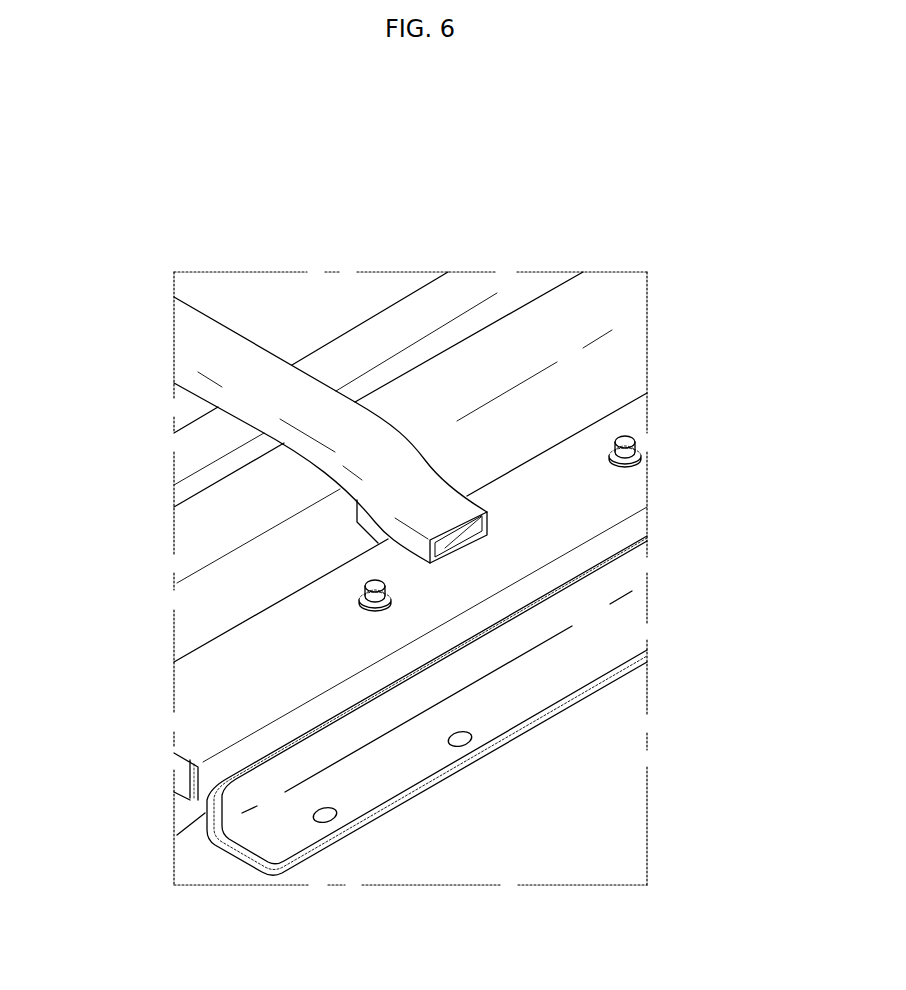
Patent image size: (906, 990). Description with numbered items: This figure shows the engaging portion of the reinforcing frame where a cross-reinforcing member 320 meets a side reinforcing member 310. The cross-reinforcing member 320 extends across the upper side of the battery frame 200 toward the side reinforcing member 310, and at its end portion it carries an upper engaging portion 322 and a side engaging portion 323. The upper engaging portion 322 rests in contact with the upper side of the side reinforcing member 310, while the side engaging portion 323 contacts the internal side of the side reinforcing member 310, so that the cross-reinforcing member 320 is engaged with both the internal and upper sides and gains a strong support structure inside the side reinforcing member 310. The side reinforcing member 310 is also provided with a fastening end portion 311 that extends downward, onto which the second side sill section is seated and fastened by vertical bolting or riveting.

The battery frame 200 is at (455, 303).
The side reinforcing member 310 is at (485, 573).
The fastening end portion 311 is at (518, 708).
The cross-reinforcing member 320 is at (245, 368).
The upper engaging portion 322 is at (487, 512).
The side engaging portion 323 is at (373, 525).